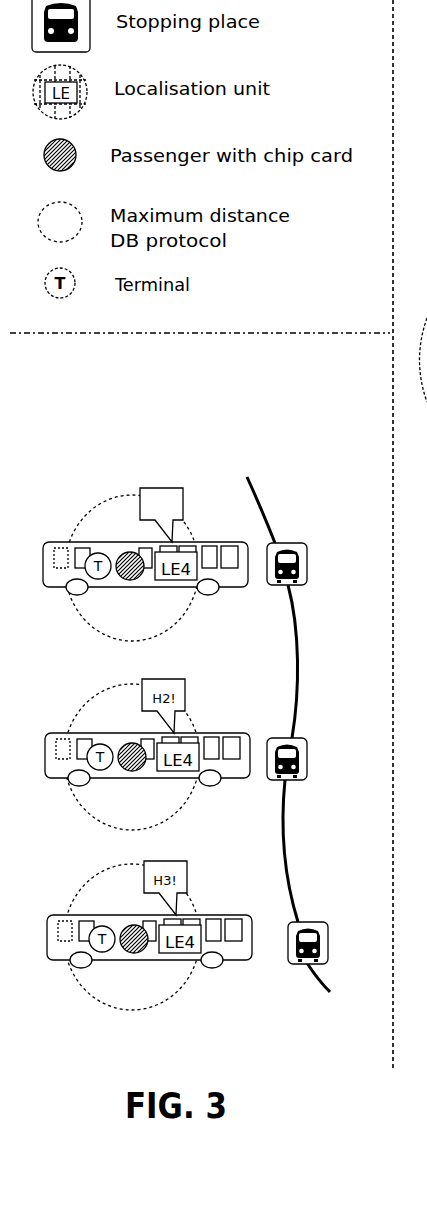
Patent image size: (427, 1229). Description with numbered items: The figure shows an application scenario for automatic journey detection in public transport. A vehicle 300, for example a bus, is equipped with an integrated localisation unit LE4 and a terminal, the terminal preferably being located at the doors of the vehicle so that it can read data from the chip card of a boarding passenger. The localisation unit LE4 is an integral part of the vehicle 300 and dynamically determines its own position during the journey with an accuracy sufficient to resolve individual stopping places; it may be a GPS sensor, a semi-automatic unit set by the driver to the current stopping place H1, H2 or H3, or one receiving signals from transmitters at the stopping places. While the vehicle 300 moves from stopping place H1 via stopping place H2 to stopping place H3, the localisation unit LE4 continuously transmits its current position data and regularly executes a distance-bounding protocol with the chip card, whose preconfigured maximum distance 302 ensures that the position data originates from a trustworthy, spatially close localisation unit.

The vehicle 300 is at (145, 541).
The maximum distance 302 is at (178, 622).
The localisation unit LE4 is at (176, 566).
The stopping place H1 is at (302, 564).
The stopping place H2 is at (302, 759).
The stopping place H3 is at (326, 943).